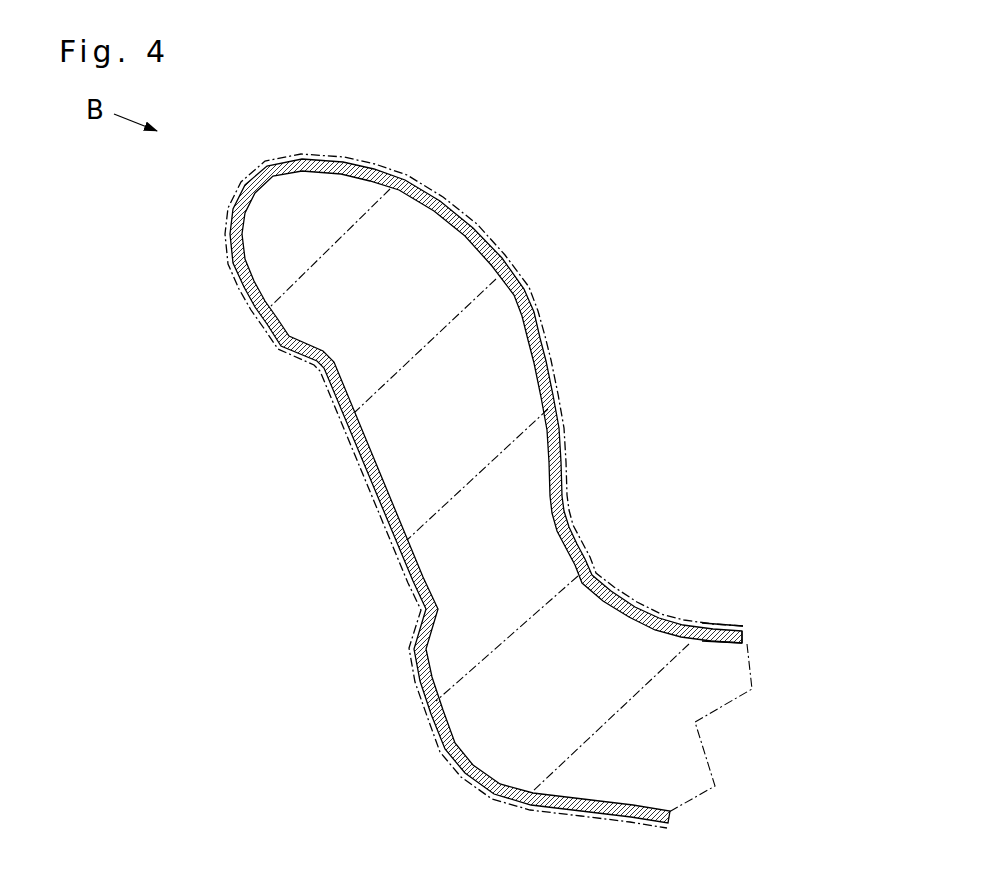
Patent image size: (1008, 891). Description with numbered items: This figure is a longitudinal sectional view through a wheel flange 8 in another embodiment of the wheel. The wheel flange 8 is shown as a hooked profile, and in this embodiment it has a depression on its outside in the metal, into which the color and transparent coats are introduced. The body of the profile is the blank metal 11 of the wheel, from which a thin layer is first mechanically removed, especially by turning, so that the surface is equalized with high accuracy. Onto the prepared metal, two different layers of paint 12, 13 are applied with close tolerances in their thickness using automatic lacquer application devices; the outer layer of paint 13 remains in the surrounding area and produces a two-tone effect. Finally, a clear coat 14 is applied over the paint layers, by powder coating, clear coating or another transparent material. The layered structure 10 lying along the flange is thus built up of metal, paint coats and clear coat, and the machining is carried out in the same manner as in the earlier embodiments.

The wheel flange 8 is at (418, 143).
The outer layer of profile 10 is at (362, 503).
The blank metal 11 is at (509, 342).
The layer of paint 12 is at (742, 646).
The outer layer of paint 13 is at (746, 638).
The clear coat 14 is at (733, 631).